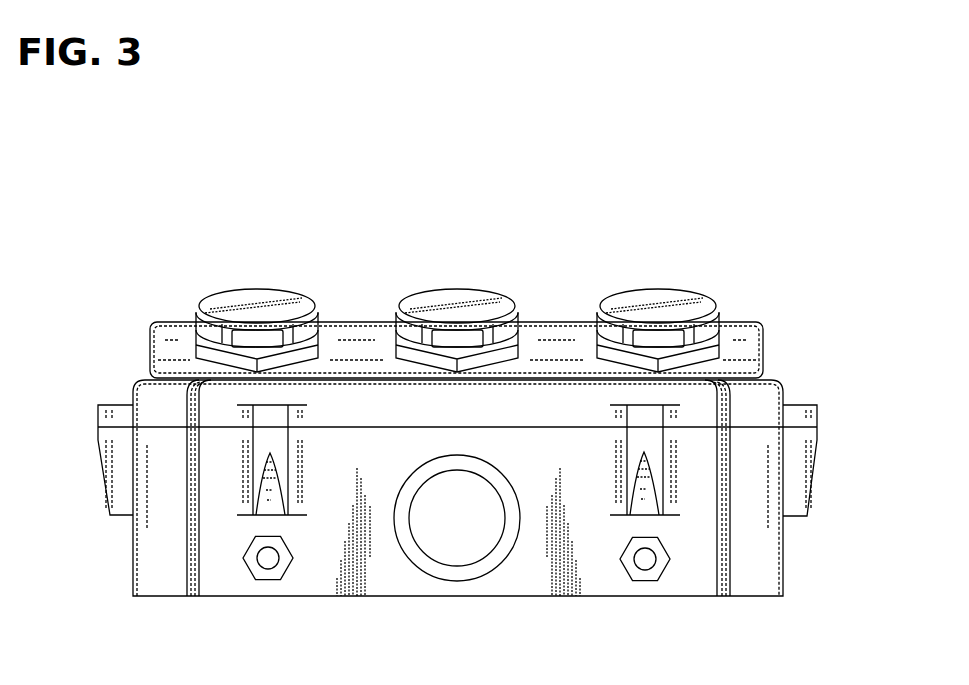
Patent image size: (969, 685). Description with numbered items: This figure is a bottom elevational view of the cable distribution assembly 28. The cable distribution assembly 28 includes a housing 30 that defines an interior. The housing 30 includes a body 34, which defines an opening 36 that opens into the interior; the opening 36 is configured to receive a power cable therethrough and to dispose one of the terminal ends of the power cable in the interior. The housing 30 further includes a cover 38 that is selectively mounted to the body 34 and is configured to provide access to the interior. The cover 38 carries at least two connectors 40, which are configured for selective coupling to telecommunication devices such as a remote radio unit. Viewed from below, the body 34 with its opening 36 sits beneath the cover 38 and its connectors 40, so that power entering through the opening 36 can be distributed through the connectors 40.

The cable distribution assembly 28 is at (801, 319).
The housing 30 is at (758, 542).
The body 34 is at (392, 580).
The opening 36 is at (423, 553).
The cover 38 is at (152, 400).
The connectors 40 is at (258, 292).